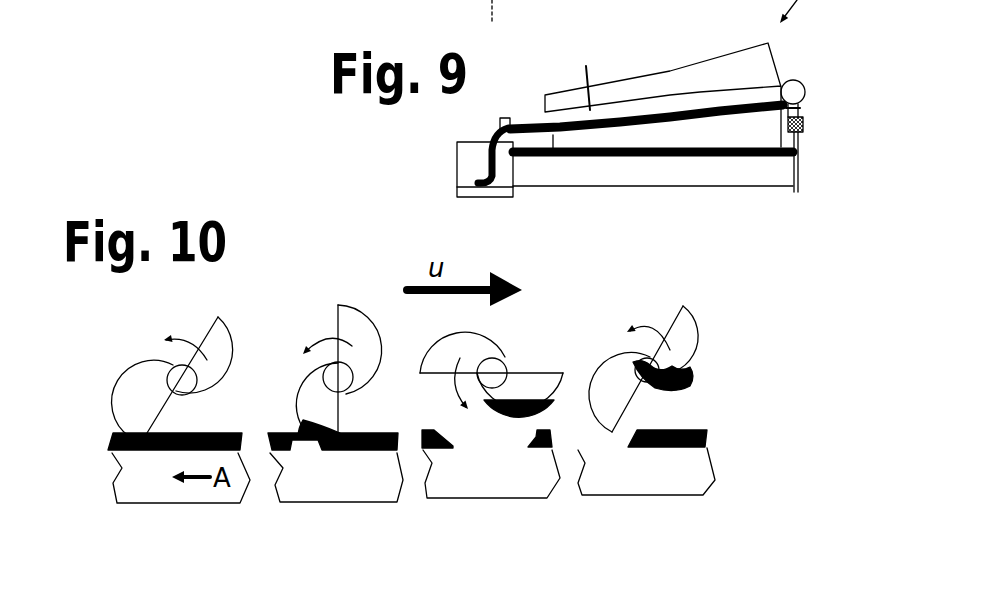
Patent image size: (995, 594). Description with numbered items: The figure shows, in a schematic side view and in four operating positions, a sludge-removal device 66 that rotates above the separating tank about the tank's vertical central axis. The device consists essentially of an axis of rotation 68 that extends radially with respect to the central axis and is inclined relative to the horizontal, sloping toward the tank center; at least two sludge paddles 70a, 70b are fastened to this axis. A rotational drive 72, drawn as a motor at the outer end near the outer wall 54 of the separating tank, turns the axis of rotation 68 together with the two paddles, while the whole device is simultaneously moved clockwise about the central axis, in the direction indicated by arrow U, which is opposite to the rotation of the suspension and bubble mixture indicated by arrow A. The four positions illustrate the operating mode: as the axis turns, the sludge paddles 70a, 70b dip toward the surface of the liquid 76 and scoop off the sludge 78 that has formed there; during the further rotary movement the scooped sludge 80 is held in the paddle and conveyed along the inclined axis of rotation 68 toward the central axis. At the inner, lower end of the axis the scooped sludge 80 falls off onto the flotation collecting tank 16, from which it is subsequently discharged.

In FIG. 9, the flotation collecting tank 16 is at (467, 163).
In FIG. 9, the outer wall 54 is at (798, 178).
In FIG. 10, the sludge-removal device 66 is at (345, 279).
In FIG. 9, the axis of rotation 68 is at (586, 66).
In FIG. 10, the axis of rotation 68 is at (160, 368).
In FIG. 9, the sludge paddle 70a is at (687, 66).
In FIG. 10, the sludge paddle 70a is at (120, 398).
In FIG. 9, the sludge paddle 70b is at (768, 128).
In FIG. 10, the sludge paddle 70b is at (232, 332).
In FIG. 9, the rotational drive 72 is at (805, 85).
In FIG. 10, the liquid 76 is at (127, 484).
In FIG. 10, the sludge 78 is at (108, 442).
In FIG. 9, the scooped sludge 80 is at (540, 122).
In FIG. 10, the scooped sludge 80 is at (543, 392).